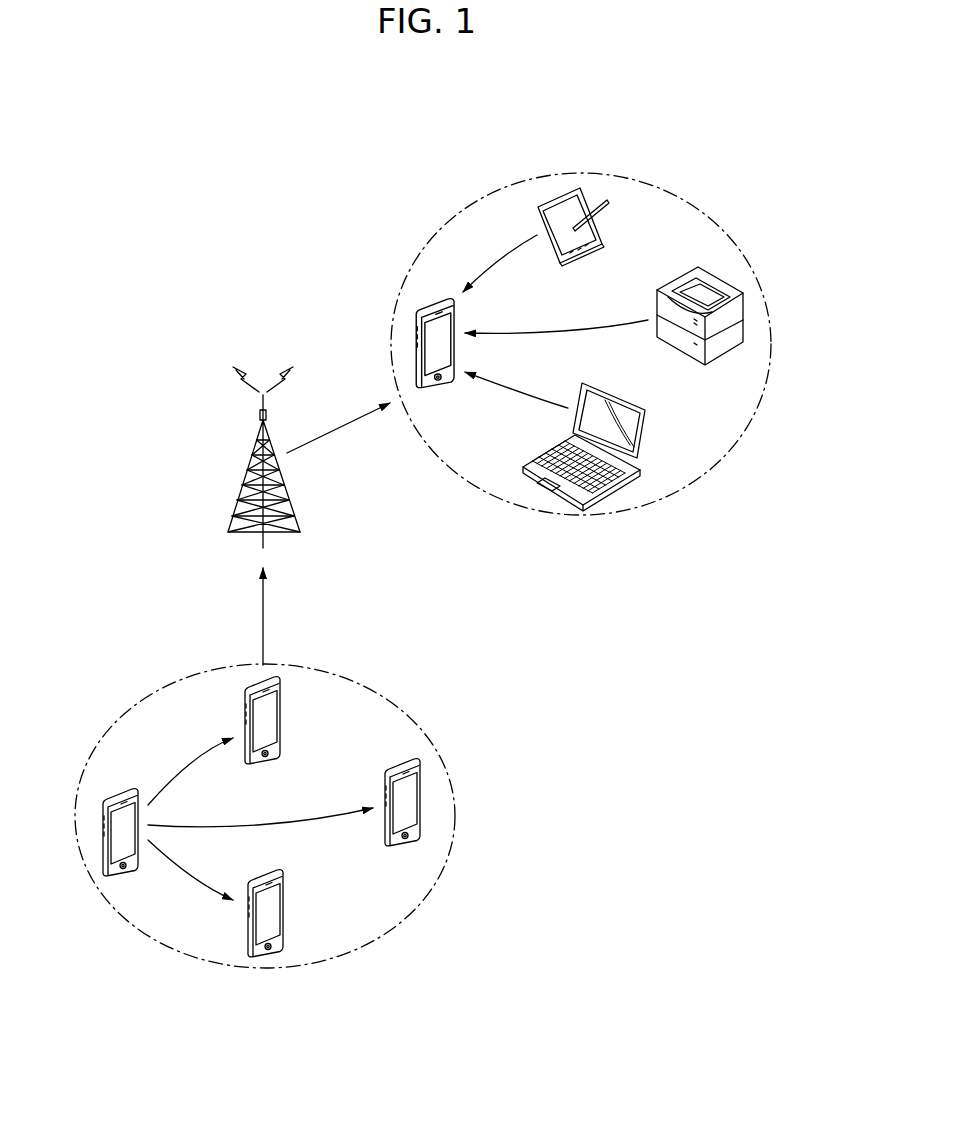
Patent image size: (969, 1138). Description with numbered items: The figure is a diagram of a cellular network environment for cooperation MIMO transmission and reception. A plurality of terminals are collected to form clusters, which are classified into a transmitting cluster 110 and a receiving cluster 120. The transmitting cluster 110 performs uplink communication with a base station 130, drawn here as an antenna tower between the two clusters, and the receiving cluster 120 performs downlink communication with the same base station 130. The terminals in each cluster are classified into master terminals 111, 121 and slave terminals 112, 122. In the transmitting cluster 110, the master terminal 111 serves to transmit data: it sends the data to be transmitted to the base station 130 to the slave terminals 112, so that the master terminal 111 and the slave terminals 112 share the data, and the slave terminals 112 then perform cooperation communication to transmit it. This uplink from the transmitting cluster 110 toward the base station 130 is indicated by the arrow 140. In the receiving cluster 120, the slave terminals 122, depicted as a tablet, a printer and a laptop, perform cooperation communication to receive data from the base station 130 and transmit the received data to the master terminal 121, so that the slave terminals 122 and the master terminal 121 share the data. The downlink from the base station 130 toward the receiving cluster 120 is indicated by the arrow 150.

The transmitting cluster 110 is at (397, 927).
The master terminal 111 is at (123, 857).
The slave terminal 112 is at (408, 798).
The receiving cluster 120 is at (457, 217).
The master terminal 121 is at (417, 315).
The slave terminal 122 is at (560, 196).
The base station 130 is at (243, 490).
The uplink communication link 140 is at (263, 613).
The downlink communication link 150 is at (343, 428).